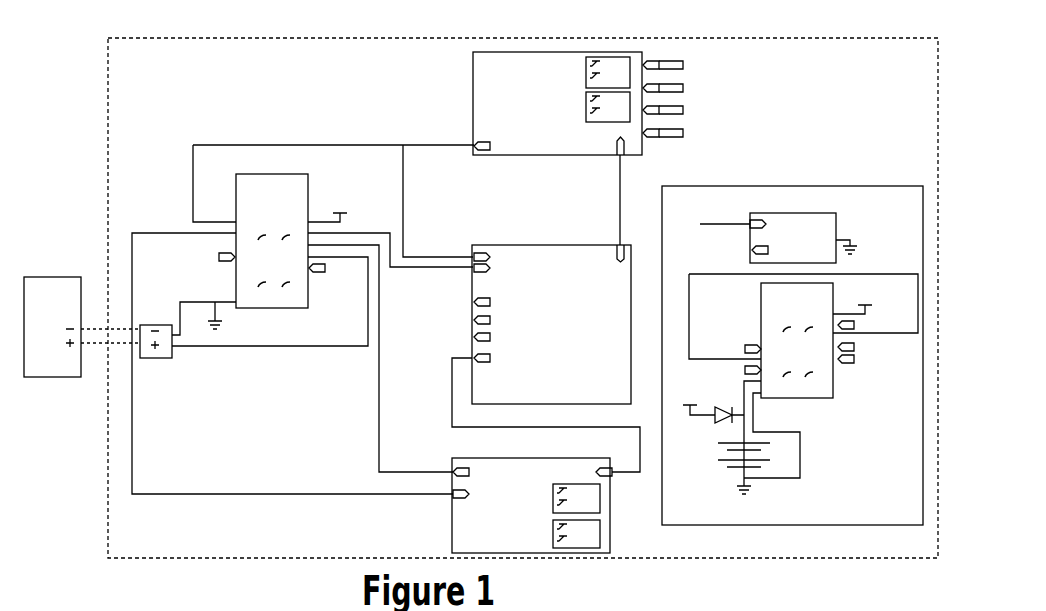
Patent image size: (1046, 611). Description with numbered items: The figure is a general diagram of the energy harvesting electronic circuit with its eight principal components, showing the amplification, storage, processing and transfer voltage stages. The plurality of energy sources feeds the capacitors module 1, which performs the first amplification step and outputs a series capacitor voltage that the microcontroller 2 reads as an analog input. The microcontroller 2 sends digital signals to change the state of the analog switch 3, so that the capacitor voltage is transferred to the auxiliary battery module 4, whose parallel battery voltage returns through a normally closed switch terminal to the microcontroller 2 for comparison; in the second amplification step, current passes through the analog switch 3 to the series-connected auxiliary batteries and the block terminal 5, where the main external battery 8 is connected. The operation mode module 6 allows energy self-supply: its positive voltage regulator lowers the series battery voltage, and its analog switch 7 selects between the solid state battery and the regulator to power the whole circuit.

The capacitors module 1 is at (591, 103).
The microcontroller 2 is at (551, 324).
The analog switch ADG1634 3 is at (272, 247).
The auxiliary battery module 4 is at (532, 505).
The block terminal 5 is at (156, 360).
The operation mode module 6 is at (792, 355).
The analog switch NX3L2467 7 is at (797, 347).
The main external battery 8 is at (52, 327).